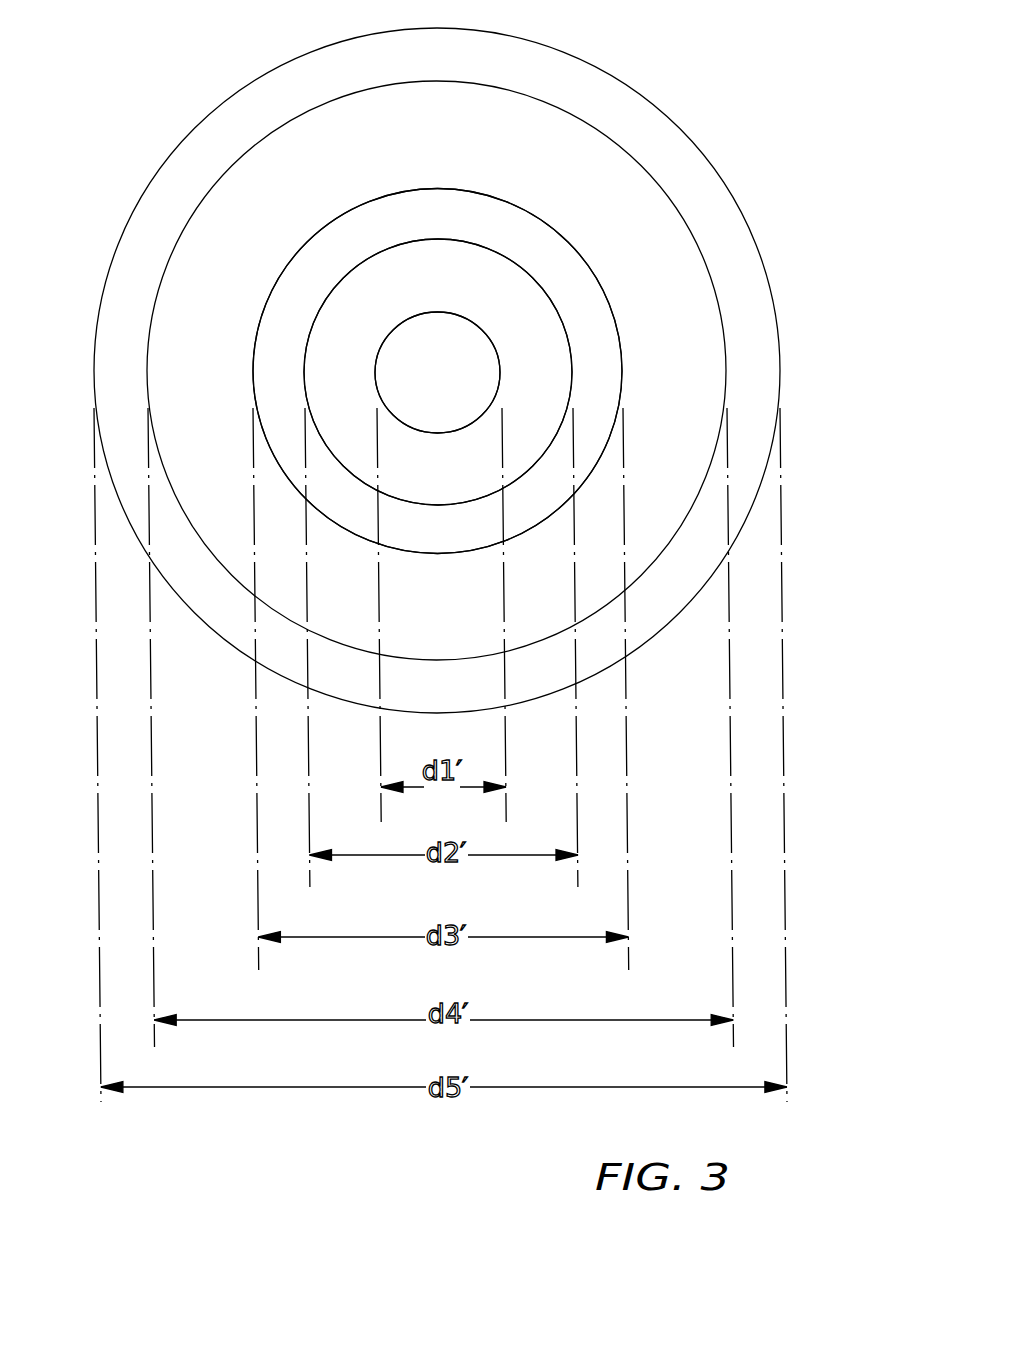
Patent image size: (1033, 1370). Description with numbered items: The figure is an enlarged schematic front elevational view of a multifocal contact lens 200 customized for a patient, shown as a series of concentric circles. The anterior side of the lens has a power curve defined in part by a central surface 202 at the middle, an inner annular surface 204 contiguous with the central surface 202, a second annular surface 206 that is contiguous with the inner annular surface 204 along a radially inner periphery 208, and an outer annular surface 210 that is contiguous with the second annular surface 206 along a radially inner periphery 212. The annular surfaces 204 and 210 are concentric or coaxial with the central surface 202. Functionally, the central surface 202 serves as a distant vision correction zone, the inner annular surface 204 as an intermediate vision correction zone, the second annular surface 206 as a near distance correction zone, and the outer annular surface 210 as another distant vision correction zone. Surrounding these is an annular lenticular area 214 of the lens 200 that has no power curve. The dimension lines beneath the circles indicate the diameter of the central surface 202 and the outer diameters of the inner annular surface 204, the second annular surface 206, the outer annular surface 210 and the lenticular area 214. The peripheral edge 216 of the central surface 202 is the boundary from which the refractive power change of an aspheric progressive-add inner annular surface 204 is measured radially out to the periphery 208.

The multifocal contact lens 200 is at (482, 368).
The central surface 202 is at (435, 358).
The inner annular surface 204 is at (333, 362).
The second annular surface 206 is at (345, 237).
The radially inner periphery 208 is at (565, 323).
The outer annular surface 210 is at (697, 362).
The radially inner periphery 212 is at (620, 348).
The annular lenticular area 214 is at (608, 87).
The peripheral edge 216 is at (493, 338).